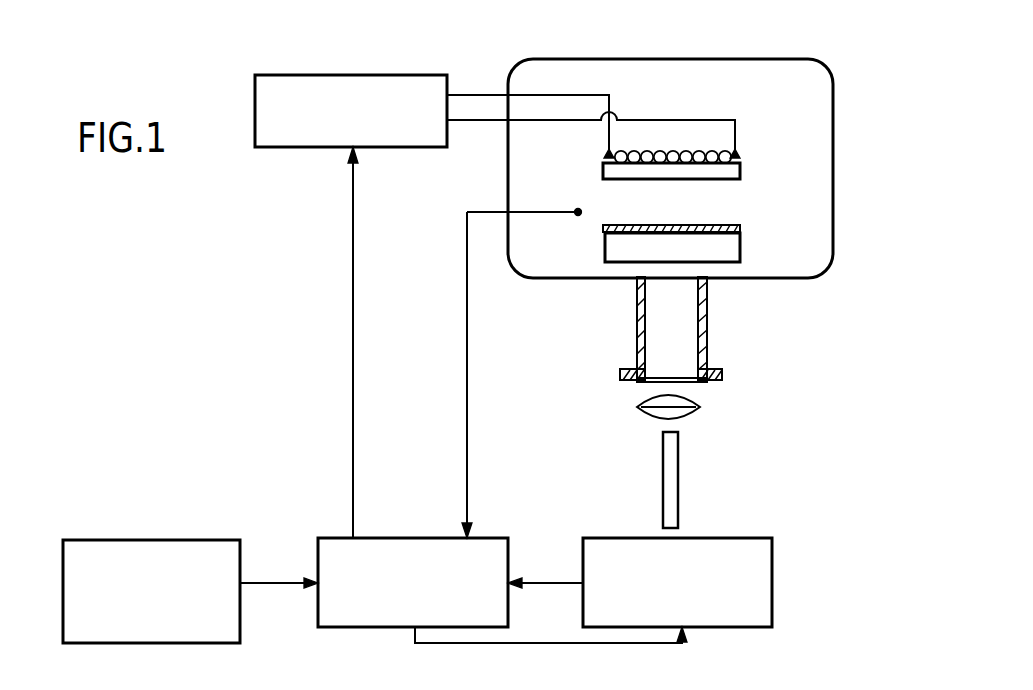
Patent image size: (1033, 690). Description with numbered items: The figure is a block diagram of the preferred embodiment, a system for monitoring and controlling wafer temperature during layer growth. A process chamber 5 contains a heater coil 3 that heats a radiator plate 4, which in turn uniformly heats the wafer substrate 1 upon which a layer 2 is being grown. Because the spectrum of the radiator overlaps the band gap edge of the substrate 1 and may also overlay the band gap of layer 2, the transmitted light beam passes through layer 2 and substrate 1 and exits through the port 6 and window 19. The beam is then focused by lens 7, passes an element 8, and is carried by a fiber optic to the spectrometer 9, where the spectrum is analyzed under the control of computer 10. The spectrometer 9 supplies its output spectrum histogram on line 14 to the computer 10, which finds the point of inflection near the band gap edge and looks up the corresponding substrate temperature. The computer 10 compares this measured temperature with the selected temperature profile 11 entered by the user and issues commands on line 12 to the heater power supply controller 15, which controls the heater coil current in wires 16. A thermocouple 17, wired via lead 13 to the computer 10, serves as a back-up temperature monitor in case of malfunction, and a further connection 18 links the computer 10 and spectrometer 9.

The substrate 1 is at (733, 250).
The layer 2 is at (733, 227).
The heater coil 3 is at (740, 153).
The radiator plate 4 is at (742, 165).
The process chamber 5 is at (810, 59).
The port 6 is at (707, 313).
The lens 7 is at (702, 407).
The slit 8 is at (678, 472).
The spectrometer 9 is at (767, 538).
The computer 10 is at (400, 538).
The temperature profile 11 is at (160, 540).
The line 12 is at (355, 427).
The lead 13 is at (467, 462).
The line 14 is at (548, 580).
The heater power supply controller 15 is at (298, 148).
The wires 16 is at (467, 95).
The thermocouple 17 is at (578, 215).
The computer to spectrometer control line 18 is at (551, 643).
The window 19 is at (648, 385).